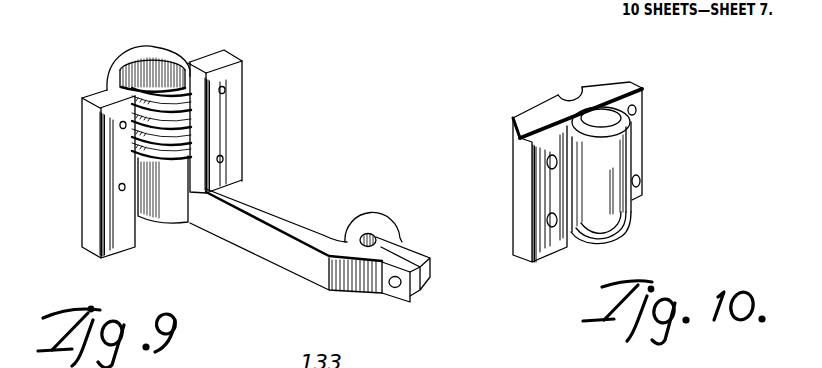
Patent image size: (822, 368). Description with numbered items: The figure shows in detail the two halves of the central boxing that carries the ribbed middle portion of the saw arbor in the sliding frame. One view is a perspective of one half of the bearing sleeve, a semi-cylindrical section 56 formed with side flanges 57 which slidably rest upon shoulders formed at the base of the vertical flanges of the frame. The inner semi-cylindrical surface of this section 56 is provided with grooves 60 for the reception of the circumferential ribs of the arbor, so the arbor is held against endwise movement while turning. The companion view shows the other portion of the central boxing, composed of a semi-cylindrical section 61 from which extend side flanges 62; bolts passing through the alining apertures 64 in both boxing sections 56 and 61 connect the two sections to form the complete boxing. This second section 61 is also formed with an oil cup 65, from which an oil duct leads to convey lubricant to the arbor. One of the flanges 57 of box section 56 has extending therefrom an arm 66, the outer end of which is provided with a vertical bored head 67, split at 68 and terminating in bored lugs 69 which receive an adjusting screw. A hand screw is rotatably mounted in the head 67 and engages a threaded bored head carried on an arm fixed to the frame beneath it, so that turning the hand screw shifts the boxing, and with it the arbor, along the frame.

In FIG. 9, the semi-cylindrical section 56 is at (150, 48).
In FIG. 9, the side flanges 57 is at (98, 158).
In FIG. 9, the grooves 60 is at (172, 80).
In FIG. 10, the semi-cylindrical section 61 is at (510, 118).
In FIG. 10, the side flanges 62 is at (520, 172).
In FIG. 9, the alining apertures 64 is at (225, 89).
In FIG. 10, the alining apertures 64 is at (636, 110).
In FIG. 10, the oil cup 65 is at (610, 180).
In FIG. 9, the arm 66 is at (272, 217).
In FIG. 9, the vertical bored head 67 is at (366, 233).
In FIG. 9, the split 68 is at (406, 237).
In FIG. 9, the bored lugs 69 is at (431, 278).